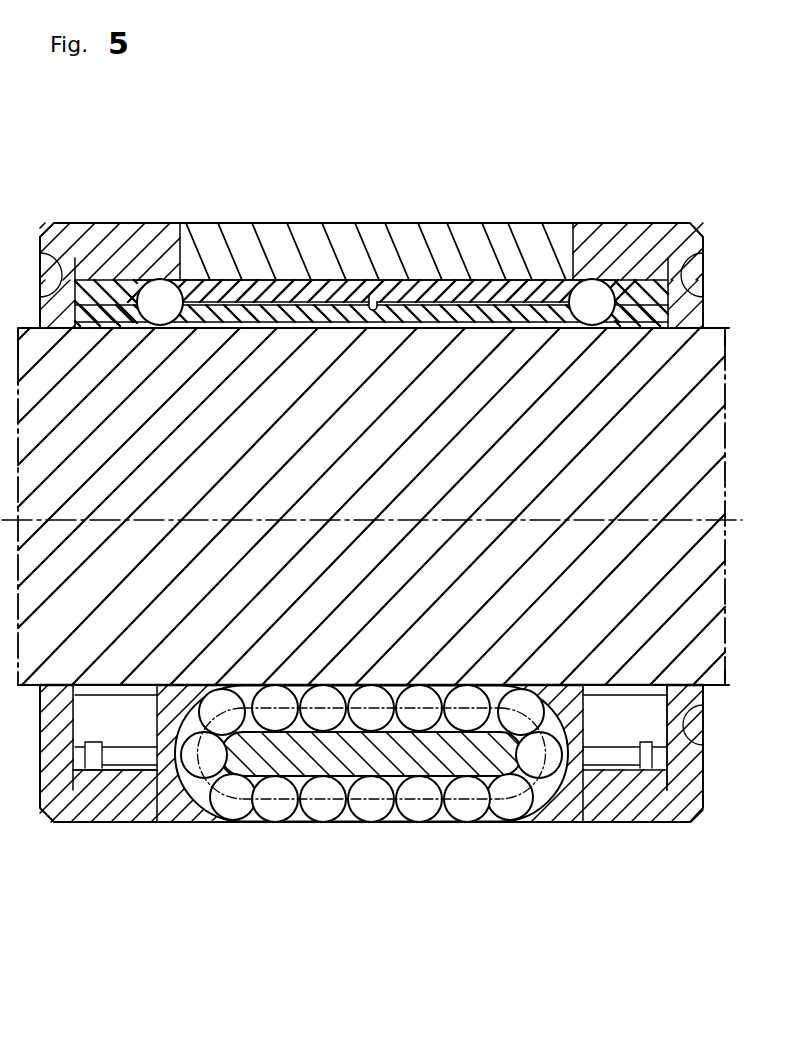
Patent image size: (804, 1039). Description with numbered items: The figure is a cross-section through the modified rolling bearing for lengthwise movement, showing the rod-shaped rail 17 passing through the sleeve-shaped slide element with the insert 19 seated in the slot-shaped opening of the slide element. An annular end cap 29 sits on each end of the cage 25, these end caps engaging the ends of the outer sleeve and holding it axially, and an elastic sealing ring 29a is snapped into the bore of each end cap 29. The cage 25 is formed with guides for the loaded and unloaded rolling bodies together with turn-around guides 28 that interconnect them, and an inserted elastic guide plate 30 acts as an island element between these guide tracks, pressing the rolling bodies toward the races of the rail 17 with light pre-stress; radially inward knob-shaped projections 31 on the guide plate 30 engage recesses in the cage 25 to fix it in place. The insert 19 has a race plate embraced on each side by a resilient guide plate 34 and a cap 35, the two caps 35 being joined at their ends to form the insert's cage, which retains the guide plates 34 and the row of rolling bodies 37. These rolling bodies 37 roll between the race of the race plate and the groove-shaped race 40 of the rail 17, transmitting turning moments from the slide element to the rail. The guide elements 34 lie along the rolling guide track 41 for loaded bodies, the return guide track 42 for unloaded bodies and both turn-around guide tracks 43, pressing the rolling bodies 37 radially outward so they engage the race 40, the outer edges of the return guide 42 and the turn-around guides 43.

The rod-shaped rail 17 is at (213, 352).
The annular end cap 29 is at (118, 252).
The elastic sealing ring 29a is at (672, 810).
The elastic guide plate 30 is at (470, 290).
The cage 25 is at (430, 318).
The turn-around guide 28 is at (607, 287).
The knob-shaped projection 31 is at (373, 298).
The insert 19 is at (271, 830).
The groove-shaped race 40 is at (160, 822).
The cap 35 is at (383, 825).
The rolling bodies 37 is at (230, 805).
The turn-around guide track 43 is at (548, 763).
The rolling guide track 41 is at (423, 715).
The return guide track 42 is at (413, 807).
The resilient guide plate 34 is at (322, 825).